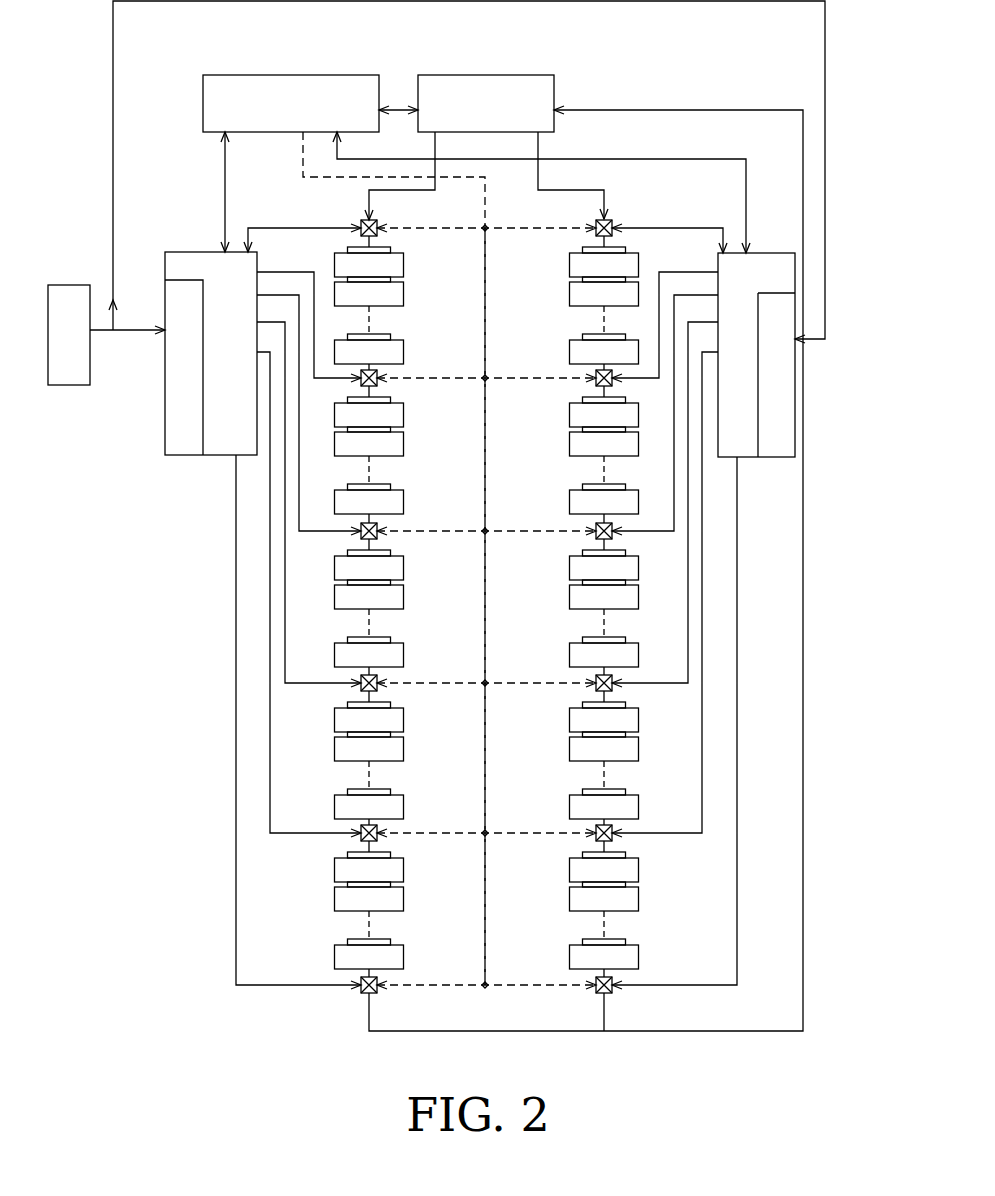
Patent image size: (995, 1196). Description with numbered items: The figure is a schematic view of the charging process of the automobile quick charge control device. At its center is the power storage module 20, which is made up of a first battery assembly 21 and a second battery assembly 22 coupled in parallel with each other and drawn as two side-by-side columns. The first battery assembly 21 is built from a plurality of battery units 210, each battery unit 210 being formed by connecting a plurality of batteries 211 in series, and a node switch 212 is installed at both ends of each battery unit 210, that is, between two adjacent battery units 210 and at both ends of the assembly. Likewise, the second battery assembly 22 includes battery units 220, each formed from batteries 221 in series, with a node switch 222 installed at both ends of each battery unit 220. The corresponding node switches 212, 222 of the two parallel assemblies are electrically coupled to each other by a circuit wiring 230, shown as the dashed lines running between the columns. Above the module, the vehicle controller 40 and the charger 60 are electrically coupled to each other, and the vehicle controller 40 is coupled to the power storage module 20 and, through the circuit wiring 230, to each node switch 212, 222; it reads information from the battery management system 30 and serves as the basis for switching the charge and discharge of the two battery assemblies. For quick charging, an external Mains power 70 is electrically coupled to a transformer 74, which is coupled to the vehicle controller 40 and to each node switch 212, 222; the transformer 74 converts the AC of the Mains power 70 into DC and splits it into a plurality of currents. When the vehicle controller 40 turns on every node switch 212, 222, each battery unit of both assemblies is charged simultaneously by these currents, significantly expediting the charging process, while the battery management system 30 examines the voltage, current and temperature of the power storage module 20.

The power storage module 20 is at (660, 587).
The first battery assembly 21 is at (327, 628).
The second battery assembly 22 is at (645, 634).
The battery management system 30 is at (236, 250).
The vehicle controller 40 is at (296, 68).
The charger 60 is at (566, 72).
The Mains power 70 is at (65, 284).
The transformer 74 is at (189, 251).
The battery unit 210 is at (364, 608).
The battery 211 is at (406, 287).
The node switch 212 is at (360, 385).
The battery unit 220 is at (643, 608).
The battery 221 is at (570, 294).
The node switch 222 is at (598, 382).
The circuit wiring 230 is at (498, 226).